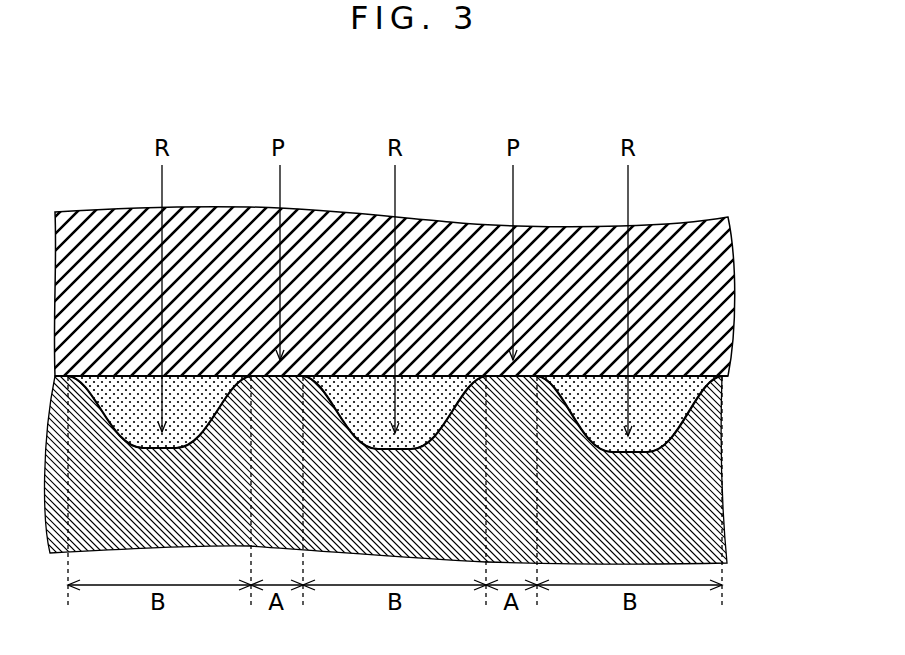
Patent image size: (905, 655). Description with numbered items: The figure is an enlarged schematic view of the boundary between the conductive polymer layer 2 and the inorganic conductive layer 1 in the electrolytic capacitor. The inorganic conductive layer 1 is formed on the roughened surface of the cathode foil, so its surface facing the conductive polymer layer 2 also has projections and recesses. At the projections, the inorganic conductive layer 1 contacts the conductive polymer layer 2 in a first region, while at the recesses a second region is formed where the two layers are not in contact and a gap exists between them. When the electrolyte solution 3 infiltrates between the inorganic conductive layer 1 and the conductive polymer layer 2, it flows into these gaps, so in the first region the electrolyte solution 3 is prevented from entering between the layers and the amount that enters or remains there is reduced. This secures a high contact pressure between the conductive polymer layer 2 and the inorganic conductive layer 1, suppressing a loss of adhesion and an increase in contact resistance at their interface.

The inorganic conductive layer 1 is at (677, 458).
The conductive polymer layer 2 is at (700, 308).
The electrolyte solution 3 is at (677, 402).